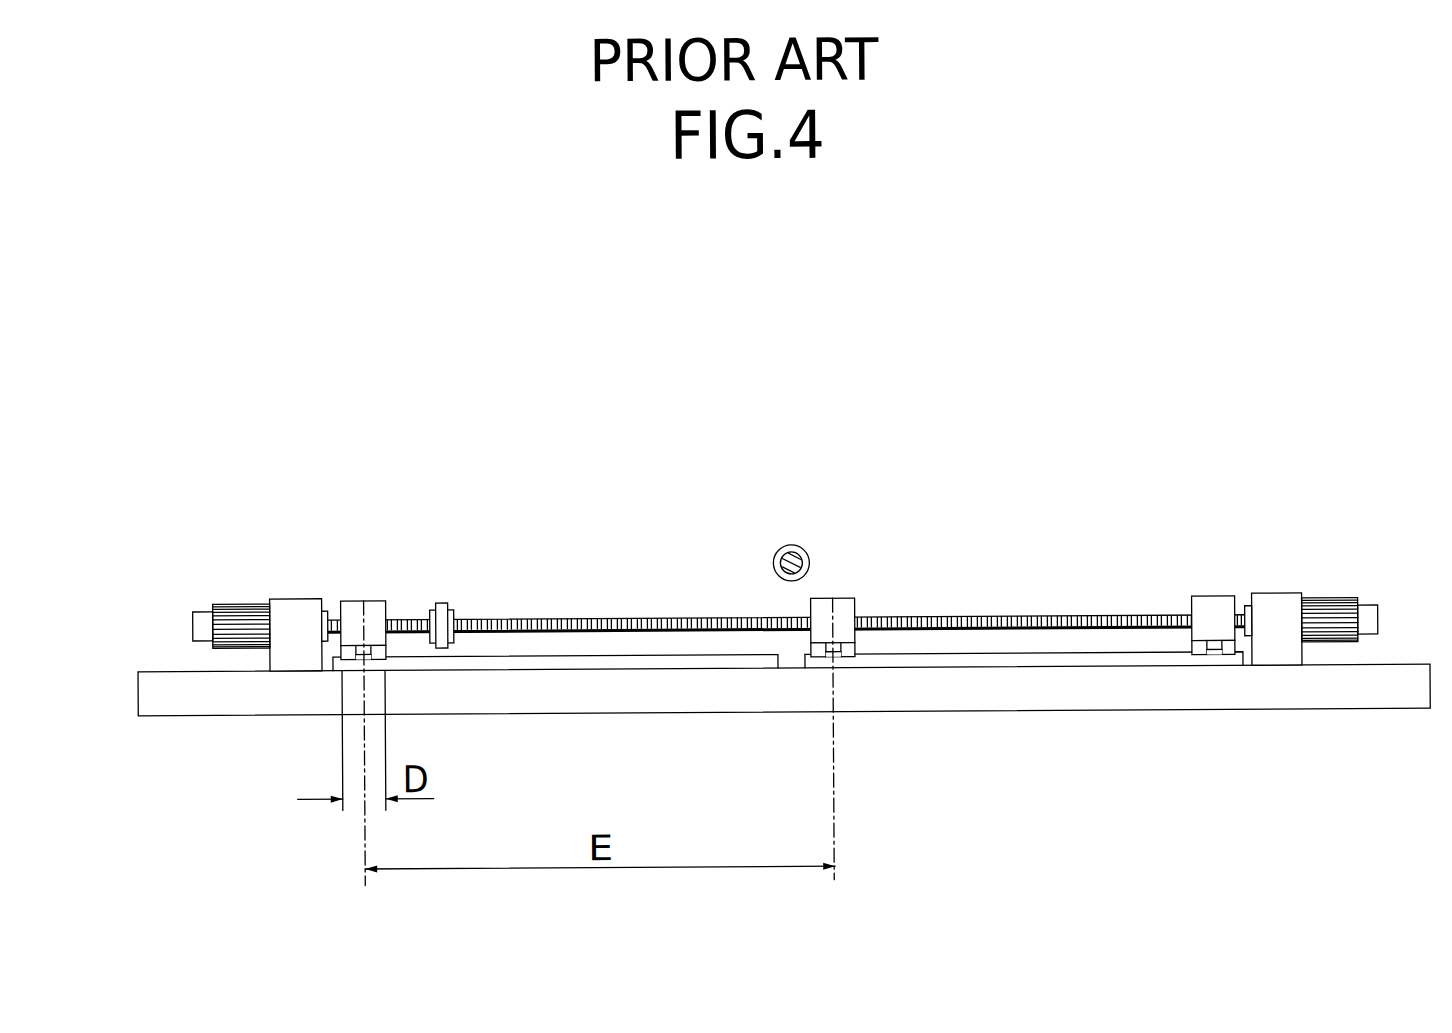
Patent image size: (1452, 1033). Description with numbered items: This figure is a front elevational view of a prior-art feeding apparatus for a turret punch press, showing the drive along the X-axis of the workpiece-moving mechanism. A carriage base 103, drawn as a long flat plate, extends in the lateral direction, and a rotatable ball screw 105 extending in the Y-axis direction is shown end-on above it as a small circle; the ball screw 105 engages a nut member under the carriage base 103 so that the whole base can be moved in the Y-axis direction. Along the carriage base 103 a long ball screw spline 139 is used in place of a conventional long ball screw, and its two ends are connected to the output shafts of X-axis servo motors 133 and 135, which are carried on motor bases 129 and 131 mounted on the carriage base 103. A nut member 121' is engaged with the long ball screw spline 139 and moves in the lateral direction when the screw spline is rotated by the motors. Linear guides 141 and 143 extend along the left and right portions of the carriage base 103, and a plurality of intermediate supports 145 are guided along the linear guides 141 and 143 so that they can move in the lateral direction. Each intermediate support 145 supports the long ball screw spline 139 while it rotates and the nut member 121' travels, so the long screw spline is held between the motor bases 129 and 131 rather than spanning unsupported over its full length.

The carriage base 103 is at (1068, 702).
The ball screw 105 is at (793, 545).
The nut member 121' is at (438, 571).
The motor base 129 is at (298, 654).
The motor base 131 is at (1273, 653).
The X-axis servo motor 133 is at (242, 600).
The X-axis servo motor 135 is at (1330, 601).
The long ball screw spline 139 is at (592, 616).
The linear guide 141 is at (557, 658).
The linear guide 143 is at (955, 659).
The intermediate support 145 is at (363, 598).